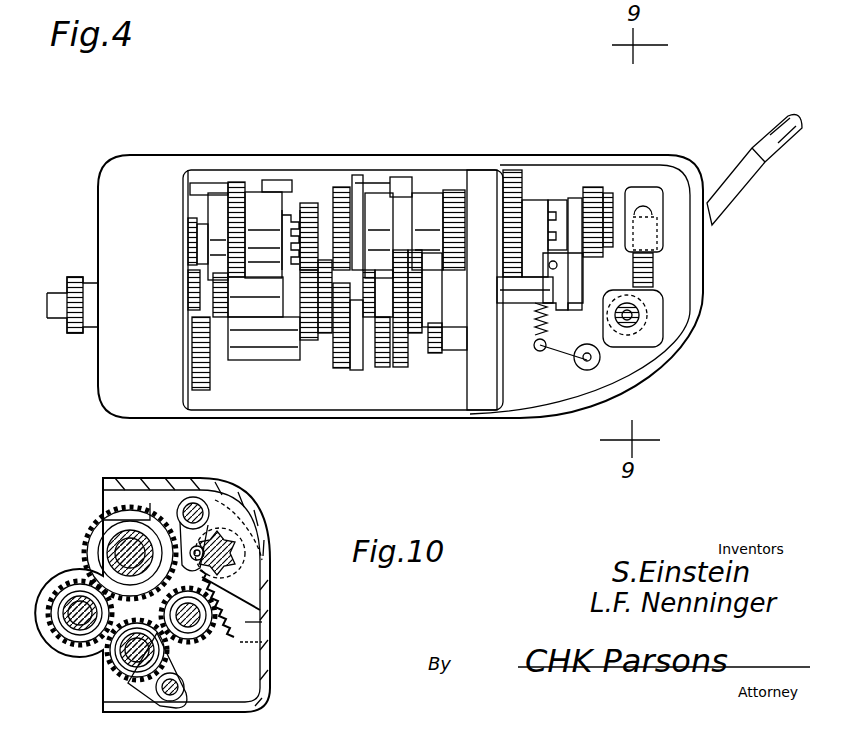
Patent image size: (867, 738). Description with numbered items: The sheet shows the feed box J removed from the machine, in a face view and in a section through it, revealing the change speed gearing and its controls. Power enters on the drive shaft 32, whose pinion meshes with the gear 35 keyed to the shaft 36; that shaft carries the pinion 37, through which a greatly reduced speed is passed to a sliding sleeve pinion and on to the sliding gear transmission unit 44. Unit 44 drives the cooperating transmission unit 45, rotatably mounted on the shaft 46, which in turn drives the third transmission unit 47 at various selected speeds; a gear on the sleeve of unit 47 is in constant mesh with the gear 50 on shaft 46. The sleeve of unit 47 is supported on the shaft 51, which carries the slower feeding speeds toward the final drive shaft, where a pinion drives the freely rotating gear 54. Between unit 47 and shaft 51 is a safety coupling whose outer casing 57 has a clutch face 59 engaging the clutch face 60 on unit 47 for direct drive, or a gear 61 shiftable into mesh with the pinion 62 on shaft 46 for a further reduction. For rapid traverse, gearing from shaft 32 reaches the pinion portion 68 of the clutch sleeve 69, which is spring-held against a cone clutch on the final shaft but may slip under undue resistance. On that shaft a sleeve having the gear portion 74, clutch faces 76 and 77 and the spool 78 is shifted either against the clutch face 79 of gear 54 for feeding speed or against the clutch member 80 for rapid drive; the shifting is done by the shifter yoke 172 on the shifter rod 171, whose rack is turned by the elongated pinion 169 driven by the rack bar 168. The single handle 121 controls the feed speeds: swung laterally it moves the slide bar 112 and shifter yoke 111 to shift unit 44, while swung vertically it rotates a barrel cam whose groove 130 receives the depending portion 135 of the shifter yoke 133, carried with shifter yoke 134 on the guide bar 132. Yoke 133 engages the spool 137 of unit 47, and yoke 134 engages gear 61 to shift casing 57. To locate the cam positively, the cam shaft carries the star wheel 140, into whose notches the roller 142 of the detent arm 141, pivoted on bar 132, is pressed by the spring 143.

In FIG. 4, the drive shaft 32 is at (55, 318).
In FIG. 10, the drive shaft 32 is at (285, 635).
In FIG. 4, the gear 35 is at (205, 385).
In FIG. 4, the shaft 36 is at (278, 360).
In FIG. 10, the shaft 36 is at (148, 655).
In FIG. 4, the pinion 37 is at (400, 368).
In FIG. 4, the sliding gear transmission unit 44 is at (350, 368).
In FIG. 4, the cooperating transmission unit 45 is at (306, 340).
In FIG. 4, the shaft 46 is at (257, 318).
In FIG. 10, the shaft 46 is at (70, 604).
In FIG. 4, the third transmission unit 47 is at (345, 195).
In FIG. 4, the gear 50 is at (438, 355).
In FIG. 4, the shaft 51 is at (200, 236).
In FIG. 10, the shaft 51 is at (120, 550).
In FIG. 4, the freely rotating gear 54 is at (513, 172).
In FIG. 4, the outer casing 57 is at (260, 210).
In FIG. 4, the clutch face 59 is at (288, 212).
In FIG. 4, the clutch face 60 is at (308, 203).
In FIG. 4, the gear 61 is at (236, 190).
In FIG. 4, the pinion 62 is at (196, 290).
In FIG. 4, the pinion portion 68 is at (453, 192).
In FIG. 4, the clutch sleeve 69 is at (422, 205).
In FIG. 4, the gear portion 74 is at (593, 187).
In FIG. 4, the clutch face 76 is at (553, 195).
In FIG. 4, the clutch face 77 is at (608, 193).
In FIG. 4, the spool or shifter groove portion 78 is at (574, 198).
In FIG. 4, the clutch face 79 is at (553, 200).
In FIG. 4, the clutch member 80 is at (628, 193).
In FIG. 10, the shifter yoke 111 is at (150, 688).
In FIG. 10, the slide bar 112 is at (184, 686).
In FIG. 4, the handle 121 is at (755, 174).
In FIG. 10, the cam groove 130 is at (266, 524).
In FIG. 4, the guide bar 132 is at (205, 188).
In FIG. 10, the guide bar 132 is at (195, 500).
In FIG. 4, the shifter yoke 133 is at (378, 183).
In FIG. 10, the shifter yoke 133 is at (150, 503).
In FIG. 4, the shifter yoke 134 is at (280, 185).
In FIG. 10, the depending portion 135 is at (240, 480).
In FIG. 4, the spool 137 is at (375, 200).
In FIG. 10, the star wheel 140 is at (246, 527).
In FIG. 10, the detent arm 141 is at (240, 530).
In FIG. 10, the roller 142 is at (250, 562).
In FIG. 10, the spring 143 is at (298, 610).
In FIG. 4, the rack bar 168 is at (655, 270).
In FIG. 4, the elongated pinion 169 is at (632, 320).
In FIG. 4, the shifter rod 171 is at (540, 350).
In FIG. 4, the shifter yoke 172 is at (559, 294).
In FIG. 10, the feed box J is at (262, 538).